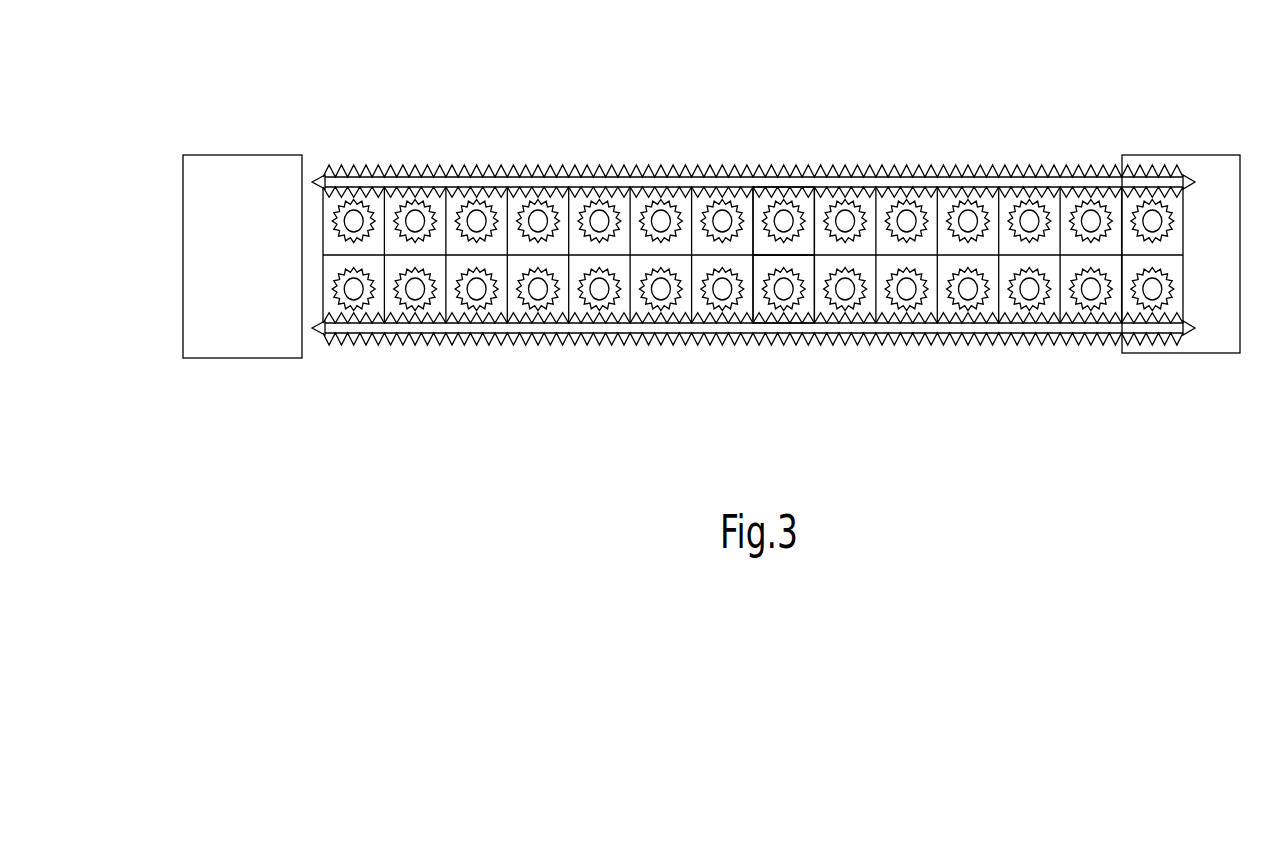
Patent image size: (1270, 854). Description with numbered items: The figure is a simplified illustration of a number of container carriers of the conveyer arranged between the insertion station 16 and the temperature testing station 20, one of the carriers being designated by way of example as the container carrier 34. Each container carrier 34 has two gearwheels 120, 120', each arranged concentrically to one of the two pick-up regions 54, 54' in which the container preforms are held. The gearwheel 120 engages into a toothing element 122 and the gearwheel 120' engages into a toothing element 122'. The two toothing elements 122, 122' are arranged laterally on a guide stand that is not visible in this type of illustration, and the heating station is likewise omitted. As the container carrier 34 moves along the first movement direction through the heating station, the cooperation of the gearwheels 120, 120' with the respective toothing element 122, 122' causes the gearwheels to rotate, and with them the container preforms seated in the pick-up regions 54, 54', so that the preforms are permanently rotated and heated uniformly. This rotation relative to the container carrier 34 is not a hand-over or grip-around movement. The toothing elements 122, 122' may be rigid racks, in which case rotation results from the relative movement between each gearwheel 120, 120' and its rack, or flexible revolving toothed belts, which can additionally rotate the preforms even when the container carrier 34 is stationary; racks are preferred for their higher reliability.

The insertion station 16 is at (1220, 355).
The temperature testing station 20 is at (238, 358).
The container carrier 34 is at (808, 200).
The pick-up region 54 is at (802, 370).
The pick-up region 54' is at (794, 124).
The gearwheel 120 is at (750, 359).
The gearwheel 120' is at (752, 149).
The toothing element 122 is at (753, 388).
The toothing element 122' is at (753, 113).